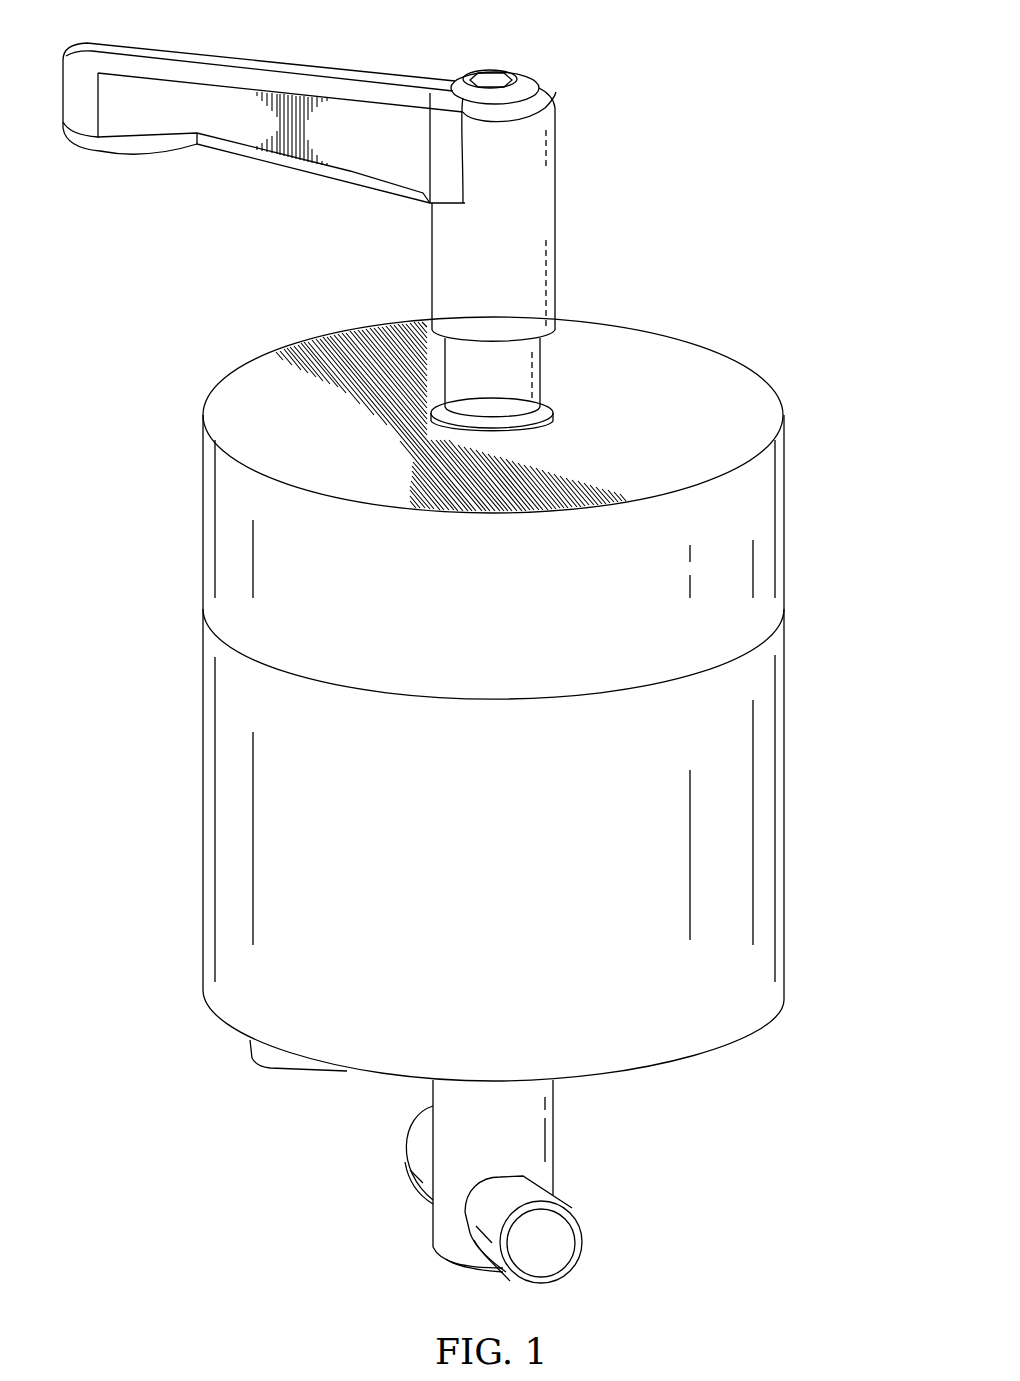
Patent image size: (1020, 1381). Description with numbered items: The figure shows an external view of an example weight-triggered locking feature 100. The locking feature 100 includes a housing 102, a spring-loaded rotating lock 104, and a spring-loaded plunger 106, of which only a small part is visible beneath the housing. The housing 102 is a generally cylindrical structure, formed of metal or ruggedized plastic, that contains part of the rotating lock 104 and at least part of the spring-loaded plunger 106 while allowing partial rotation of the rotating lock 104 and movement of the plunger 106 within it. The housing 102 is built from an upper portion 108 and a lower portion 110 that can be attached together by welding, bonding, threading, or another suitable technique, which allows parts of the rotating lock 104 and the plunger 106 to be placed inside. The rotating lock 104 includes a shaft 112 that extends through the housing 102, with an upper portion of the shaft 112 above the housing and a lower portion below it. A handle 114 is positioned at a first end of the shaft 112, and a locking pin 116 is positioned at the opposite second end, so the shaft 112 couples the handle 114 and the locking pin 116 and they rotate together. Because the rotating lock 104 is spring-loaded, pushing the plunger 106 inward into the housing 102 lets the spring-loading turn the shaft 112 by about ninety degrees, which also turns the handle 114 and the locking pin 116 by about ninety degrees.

The weight-triggered locking feature 100 is at (771, 60).
The housing 102 is at (548, 699).
The spring-loaded rotating lock 104 is at (570, 286).
The spring-loaded plunger 106 is at (284, 1074).
The upper portion 108 is at (785, 510).
The lower portion 110 is at (786, 862).
The shaft 112 is at (541, 368).
The handle 114 is at (183, 179).
The locking pin 116 is at (583, 1244).